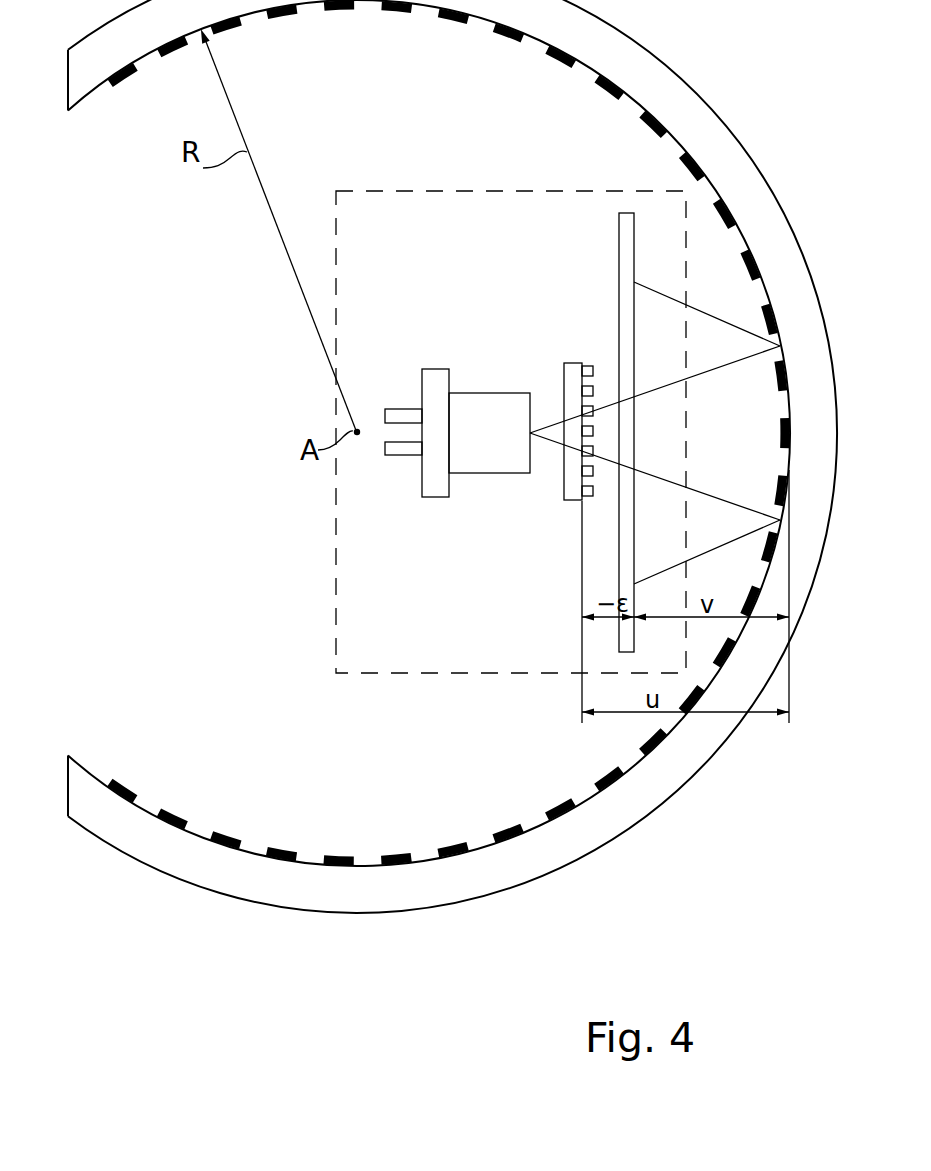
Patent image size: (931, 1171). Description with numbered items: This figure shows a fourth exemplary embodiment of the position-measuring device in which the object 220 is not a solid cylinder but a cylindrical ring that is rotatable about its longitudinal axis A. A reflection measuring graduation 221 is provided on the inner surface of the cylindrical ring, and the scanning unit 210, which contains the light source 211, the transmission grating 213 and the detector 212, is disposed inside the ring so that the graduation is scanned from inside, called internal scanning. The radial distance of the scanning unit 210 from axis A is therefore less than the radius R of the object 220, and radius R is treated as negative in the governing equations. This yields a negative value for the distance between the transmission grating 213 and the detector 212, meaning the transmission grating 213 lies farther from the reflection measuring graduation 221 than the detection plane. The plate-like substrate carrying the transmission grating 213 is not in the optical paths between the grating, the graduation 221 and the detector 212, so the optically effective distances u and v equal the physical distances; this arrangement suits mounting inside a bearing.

The scanning unit 210 is at (335, 567).
The light source 211 is at (497, 395).
The detector 212 is at (628, 212).
The transmission grating 213 is at (590, 365).
The object 220 is at (276, 900).
The reflection measuring graduation 221 is at (430, 858).